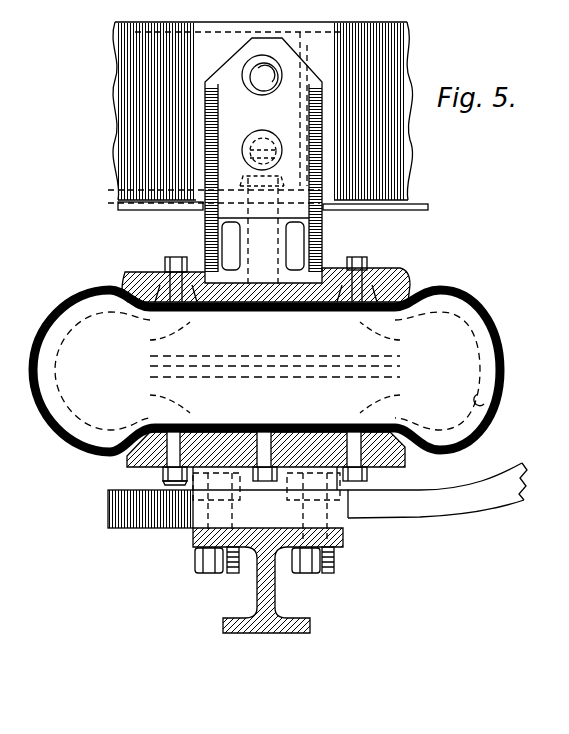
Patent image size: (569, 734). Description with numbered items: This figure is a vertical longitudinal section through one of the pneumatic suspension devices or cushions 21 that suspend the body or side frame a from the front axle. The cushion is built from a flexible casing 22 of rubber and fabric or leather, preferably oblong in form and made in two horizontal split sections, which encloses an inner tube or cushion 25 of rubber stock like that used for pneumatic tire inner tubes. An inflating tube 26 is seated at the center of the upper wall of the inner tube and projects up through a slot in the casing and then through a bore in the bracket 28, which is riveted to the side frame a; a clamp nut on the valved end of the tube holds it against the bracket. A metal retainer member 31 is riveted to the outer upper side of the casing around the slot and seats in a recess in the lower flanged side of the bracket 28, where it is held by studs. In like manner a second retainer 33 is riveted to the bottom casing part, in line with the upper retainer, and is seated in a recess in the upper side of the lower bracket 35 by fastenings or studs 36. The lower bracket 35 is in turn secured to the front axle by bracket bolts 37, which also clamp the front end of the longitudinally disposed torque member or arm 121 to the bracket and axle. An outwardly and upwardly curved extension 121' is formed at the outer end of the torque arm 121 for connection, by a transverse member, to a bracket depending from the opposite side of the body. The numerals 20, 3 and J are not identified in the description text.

The side frame a is at (416, 190).
The bolt holes of hanger bracket 20 is at (258, 105).
The bracket 28 is at (207, 237).
The inflating tube 26 is at (306, 280).
The casing 22 is at (60, 303).
The pneumatic cushion 3 is at (28, 372).
The retainer member 31 is at (107, 410).
The inner tube or cushion 25 is at (477, 422).
The pneumatic suspension device or cushion 21 is at (128, 463).
The second retainer 33 is at (402, 449).
The lower bracket 35 is at (165, 473).
The fastenings or studs 36 is at (168, 482).
The torque member or arm 121 is at (228, 514).
The curved extension 121' is at (437, 500).
The rail J is at (262, 628).
The bracket bolts 37 is at (218, 566).